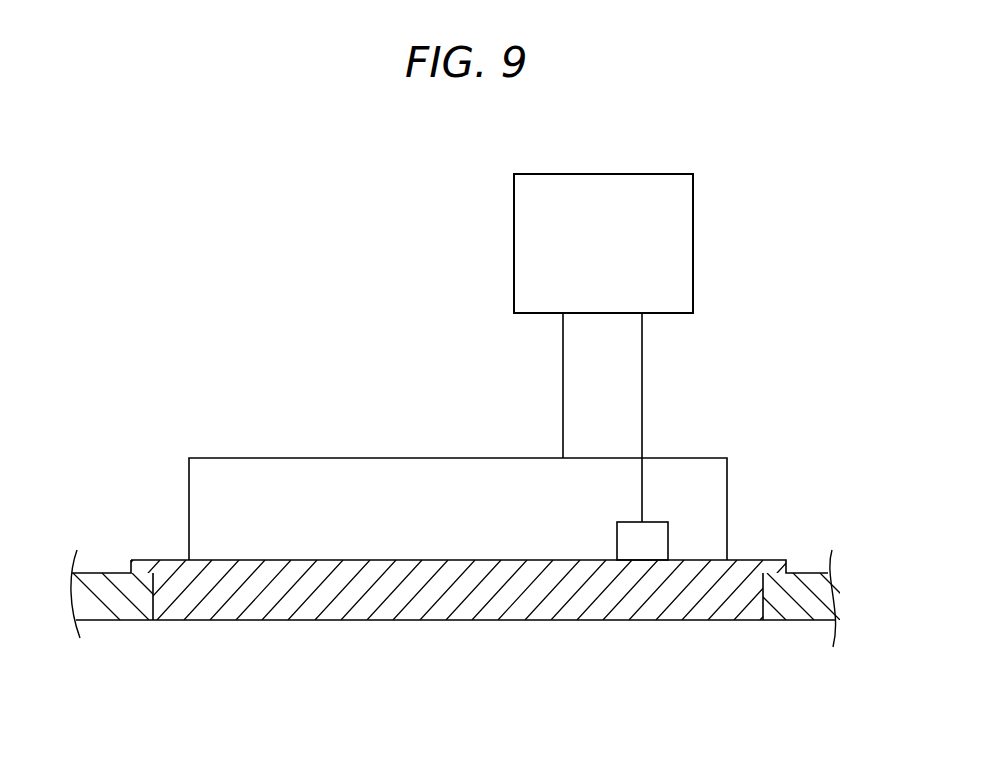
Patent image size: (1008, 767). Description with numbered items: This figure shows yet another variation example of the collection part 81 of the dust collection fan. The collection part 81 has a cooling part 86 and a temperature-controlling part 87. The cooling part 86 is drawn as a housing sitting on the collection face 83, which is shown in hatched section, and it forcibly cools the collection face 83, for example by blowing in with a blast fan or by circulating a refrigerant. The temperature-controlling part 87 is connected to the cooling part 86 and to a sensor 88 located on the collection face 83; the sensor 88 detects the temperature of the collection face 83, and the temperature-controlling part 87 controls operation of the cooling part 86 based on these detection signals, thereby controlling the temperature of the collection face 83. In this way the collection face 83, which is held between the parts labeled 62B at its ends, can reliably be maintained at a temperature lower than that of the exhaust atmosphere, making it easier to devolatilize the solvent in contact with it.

The collection part 81 is at (308, 263).
The collection face 83 is at (510, 620).
The cooling part 86 is at (407, 475).
The temperature-controlling part 87 is at (695, 243).
The sensor 88 is at (627, 529).
The support member 62B is at (98, 600).